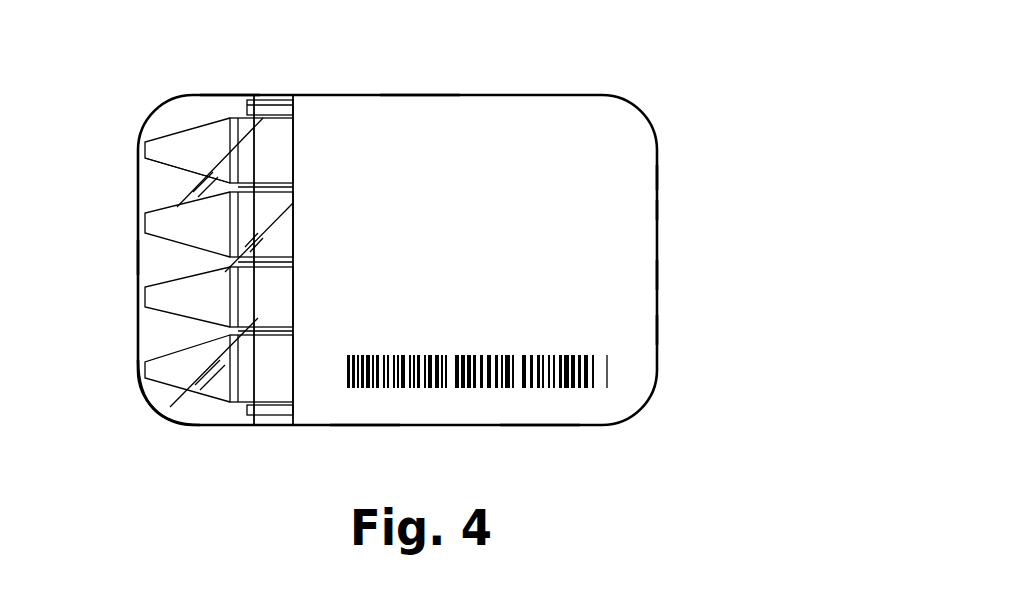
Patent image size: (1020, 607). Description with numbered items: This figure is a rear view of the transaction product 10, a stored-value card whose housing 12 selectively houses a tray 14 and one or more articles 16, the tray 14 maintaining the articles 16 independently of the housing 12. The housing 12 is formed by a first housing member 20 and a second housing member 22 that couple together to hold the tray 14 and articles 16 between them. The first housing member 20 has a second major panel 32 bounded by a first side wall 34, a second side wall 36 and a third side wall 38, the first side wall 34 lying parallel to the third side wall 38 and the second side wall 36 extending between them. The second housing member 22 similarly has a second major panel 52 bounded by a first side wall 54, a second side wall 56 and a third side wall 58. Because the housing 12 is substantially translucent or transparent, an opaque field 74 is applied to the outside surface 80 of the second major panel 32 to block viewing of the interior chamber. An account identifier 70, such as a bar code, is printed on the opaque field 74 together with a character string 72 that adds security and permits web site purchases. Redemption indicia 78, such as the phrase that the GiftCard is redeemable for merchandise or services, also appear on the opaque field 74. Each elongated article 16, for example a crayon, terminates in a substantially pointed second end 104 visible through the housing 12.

The transaction product 10 is at (444, 217).
The housing 12 is at (652, 130).
The tray 14 is at (272, 115).
The article 16 is at (180, 153).
The first housing member 20 is at (640, 207).
The second housing member 22 is at (152, 192).
The second major panel 32 is at (643, 178).
The first side wall 34 is at (535, 427).
The second side wall 36 is at (657, 330).
The third side wall 38 is at (418, 95).
The second major panel 52 is at (152, 177).
The first side wall 54 is at (187, 425).
The second side wall 56 is at (140, 258).
The third side wall 58 is at (205, 96).
The account identifier 70 is at (602, 372).
The character string 72 is at (583, 404).
The opaque field 74 is at (367, 425).
The redemption indicia 78 is at (591, 120).
The outside surface 80 is at (633, 272).
The second end 104 is at (163, 297).